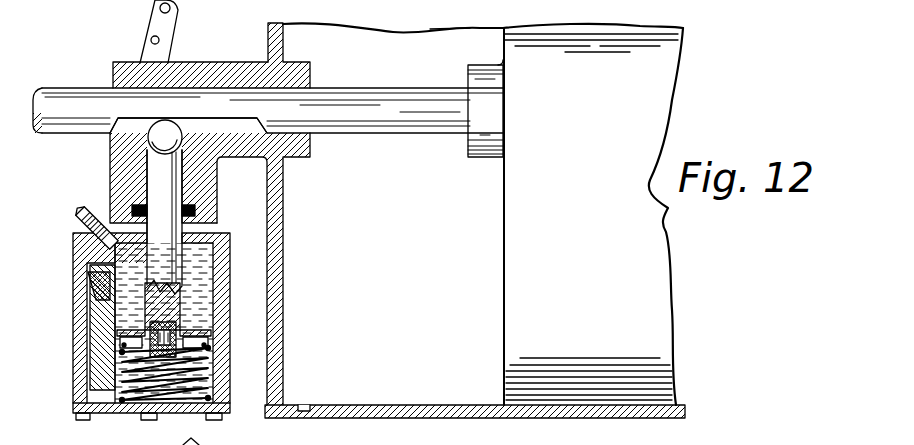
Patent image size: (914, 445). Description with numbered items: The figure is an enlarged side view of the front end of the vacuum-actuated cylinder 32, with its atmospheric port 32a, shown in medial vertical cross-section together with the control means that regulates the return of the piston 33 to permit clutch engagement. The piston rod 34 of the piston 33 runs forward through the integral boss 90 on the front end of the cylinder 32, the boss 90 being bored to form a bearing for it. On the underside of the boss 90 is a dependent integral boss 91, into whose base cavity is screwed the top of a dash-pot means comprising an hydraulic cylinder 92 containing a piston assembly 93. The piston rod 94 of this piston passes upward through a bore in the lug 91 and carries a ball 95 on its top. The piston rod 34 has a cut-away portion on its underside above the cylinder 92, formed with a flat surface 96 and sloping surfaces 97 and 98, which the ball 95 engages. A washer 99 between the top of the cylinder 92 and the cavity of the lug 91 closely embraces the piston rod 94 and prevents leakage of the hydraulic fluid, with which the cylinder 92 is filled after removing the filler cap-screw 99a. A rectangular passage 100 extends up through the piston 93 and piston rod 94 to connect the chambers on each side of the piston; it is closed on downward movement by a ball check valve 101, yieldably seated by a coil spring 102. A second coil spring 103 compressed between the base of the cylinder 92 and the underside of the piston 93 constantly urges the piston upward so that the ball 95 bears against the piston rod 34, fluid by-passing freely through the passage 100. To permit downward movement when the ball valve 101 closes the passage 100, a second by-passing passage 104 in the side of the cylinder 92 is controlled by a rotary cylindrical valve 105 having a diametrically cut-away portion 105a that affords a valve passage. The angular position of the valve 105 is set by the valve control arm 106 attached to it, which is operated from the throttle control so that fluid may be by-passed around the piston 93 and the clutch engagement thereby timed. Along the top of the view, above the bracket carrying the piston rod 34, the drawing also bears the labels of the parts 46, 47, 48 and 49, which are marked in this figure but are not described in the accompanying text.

The vacuum-actuated cylinder 32 is at (400, 414).
The atmospheric port 32a is at (300, 413).
The piston 33 is at (506, 280).
The piston rod 34 is at (50, 97).
The top wall 46 is at (393, 18).
The bracket upright 47 is at (281, 44).
The bracket block 48 is at (190, 45).
The wall portion 49 is at (340, 12).
The integral boss 90 is at (245, 148).
The dependent integral boss 91 is at (184, 204).
The hydraulic cylinder 92 is at (224, 247).
The piston assembly 93 is at (215, 338).
The piston rod 94 is at (168, 272).
The ball 95 is at (113, 143).
The flat surface 96 is at (192, 133).
The sloping surface 97 is at (117, 147).
The sloping surface 98 is at (267, 133).
The washer 99 is at (196, 212).
The filler cap-screw 99a is at (80, 212).
The rectangular passage 100 is at (178, 322).
The ball check valve 101 is at (117, 328).
The coil spring 102 is at (128, 348).
The second coil spring 103 is at (205, 385).
The second by-passing passage 104 is at (108, 382).
The rotary cylindrical valve 105 is at (100, 302).
The diametrically cut away portion 105a is at (86, 286).
The valve control arm 106 is at (157, 21).